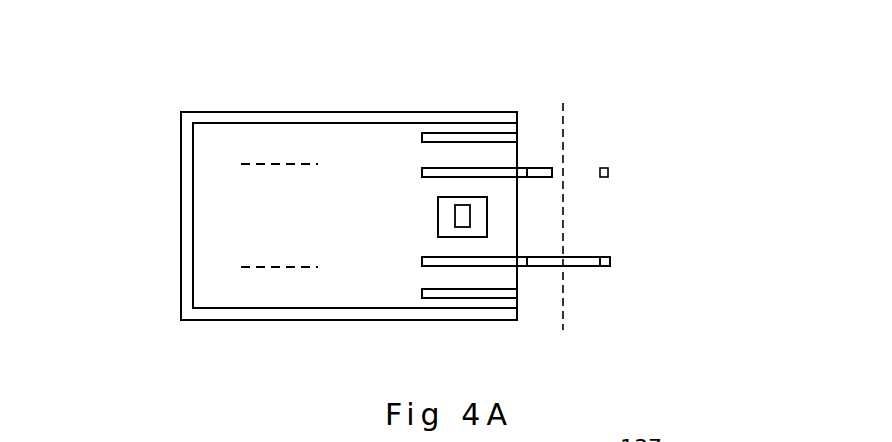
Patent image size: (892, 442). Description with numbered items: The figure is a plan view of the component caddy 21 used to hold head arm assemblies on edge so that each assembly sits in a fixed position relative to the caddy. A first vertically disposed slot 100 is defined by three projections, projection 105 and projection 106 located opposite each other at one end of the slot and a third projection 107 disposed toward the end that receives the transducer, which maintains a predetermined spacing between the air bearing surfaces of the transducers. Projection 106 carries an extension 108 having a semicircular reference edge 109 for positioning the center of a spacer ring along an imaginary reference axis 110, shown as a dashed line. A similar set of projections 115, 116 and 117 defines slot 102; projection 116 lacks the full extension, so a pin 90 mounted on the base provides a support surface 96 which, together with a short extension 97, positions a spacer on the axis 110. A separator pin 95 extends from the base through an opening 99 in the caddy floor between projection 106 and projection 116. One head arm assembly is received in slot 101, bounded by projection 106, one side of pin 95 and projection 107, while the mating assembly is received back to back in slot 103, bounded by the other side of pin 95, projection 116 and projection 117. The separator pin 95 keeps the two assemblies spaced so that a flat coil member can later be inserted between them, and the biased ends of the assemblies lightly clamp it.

The component caddy 21 is at (242, 57).
The projection 117 is at (248, 163).
The third projection 107 is at (298, 268).
The projection 115 is at (482, 133).
The projection 116 is at (425, 167).
The slot 102 is at (478, 166).
The short extension 97 is at (545, 168).
The support surface 96 is at (606, 170).
The pin 90 is at (608, 173).
The separator pin 95 is at (487, 215).
The opening 99 is at (470, 217).
The slot 103 is at (424, 202).
The slot 101 is at (424, 252).
The projection 106 is at (500, 266).
The extension 108 is at (585, 267).
The semicircular reference edge 109 is at (610, 261).
The projection 105 is at (478, 298).
The slot 100 is at (478, 288).
The imaginary reference axis 110 is at (567, 118).